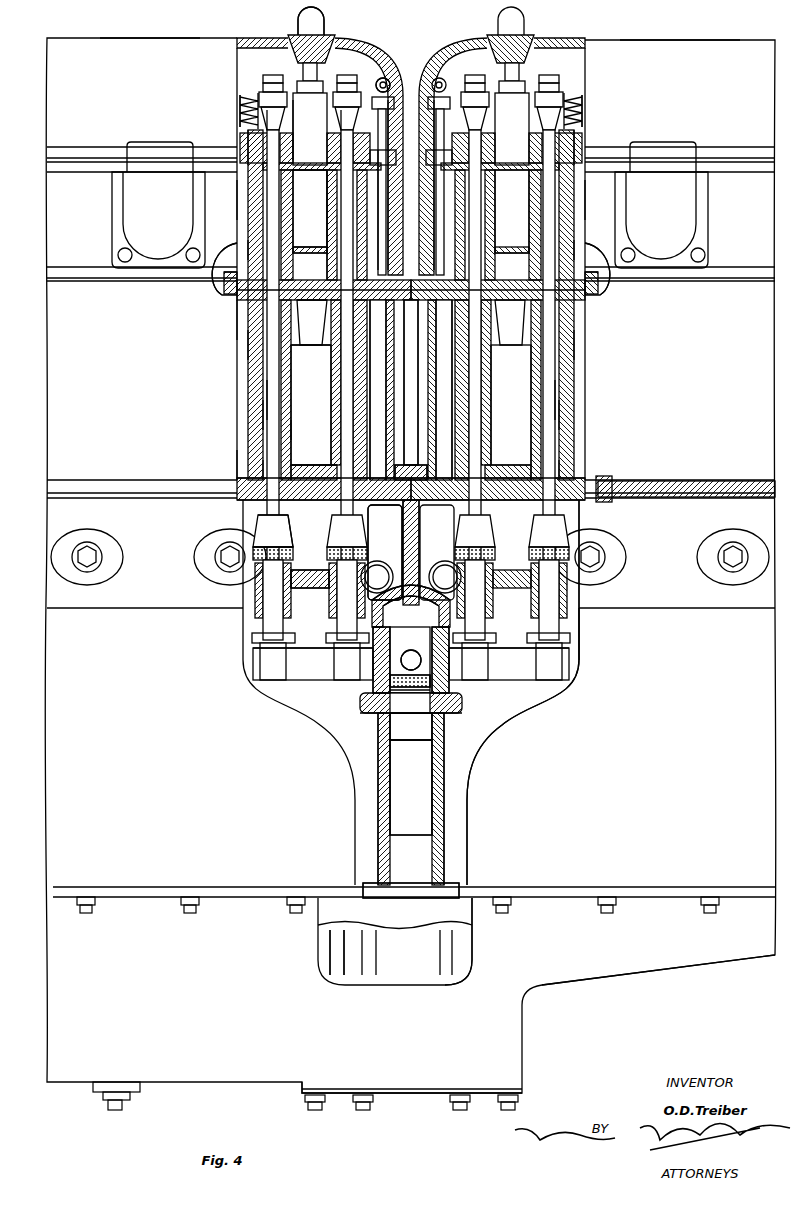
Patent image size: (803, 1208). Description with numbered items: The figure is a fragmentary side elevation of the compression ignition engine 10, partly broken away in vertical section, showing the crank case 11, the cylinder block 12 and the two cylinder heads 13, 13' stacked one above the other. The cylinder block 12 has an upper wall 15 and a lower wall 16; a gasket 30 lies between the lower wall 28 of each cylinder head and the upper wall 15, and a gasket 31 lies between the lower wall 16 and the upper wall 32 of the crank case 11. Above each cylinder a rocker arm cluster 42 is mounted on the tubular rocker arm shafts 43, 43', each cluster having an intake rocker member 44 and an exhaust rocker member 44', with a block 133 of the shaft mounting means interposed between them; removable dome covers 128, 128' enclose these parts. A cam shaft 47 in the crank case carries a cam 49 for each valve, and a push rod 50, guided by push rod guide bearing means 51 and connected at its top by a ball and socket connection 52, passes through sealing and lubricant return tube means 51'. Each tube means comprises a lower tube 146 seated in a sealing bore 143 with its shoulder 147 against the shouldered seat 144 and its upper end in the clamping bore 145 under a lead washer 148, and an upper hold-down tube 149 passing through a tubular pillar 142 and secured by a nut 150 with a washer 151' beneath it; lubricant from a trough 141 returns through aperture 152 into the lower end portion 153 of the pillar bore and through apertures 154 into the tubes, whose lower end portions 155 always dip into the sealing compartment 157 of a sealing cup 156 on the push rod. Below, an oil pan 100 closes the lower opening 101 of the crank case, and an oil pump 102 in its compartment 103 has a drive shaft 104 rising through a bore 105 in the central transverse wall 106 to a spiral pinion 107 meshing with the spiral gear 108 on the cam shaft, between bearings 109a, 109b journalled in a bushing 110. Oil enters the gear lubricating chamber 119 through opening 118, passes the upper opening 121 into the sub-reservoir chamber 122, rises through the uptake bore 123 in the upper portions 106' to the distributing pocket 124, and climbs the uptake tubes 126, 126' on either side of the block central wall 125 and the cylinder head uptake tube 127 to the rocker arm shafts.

The compression ignition internal combustion engine 10 is at (611, 978).
The crank case 11 is at (613, 703).
The cylinder block 12 is at (661, 483).
The cylinder head 13 is at (681, 205).
The cylinder head 13' is at (133, 205).
The upper cylinder block wall 15 is at (237, 320).
The lower cylinder block wall 16 is at (240, 462).
The lower wall 28 is at (240, 265).
The gasket 30 is at (237, 293).
The gasket 31 is at (237, 490).
The upper wall 32 is at (237, 504).
The rocker arm cluster 42 is at (262, 94).
The rocker arm shaft 43 is at (428, 154).
The rocker arm shaft 43' is at (400, 154).
The rocker member 44 is at (413, 56).
The rocker member 44' is at (420, 23).
The cam shaft 47 is at (505, 675).
The cam 49 is at (282, 679).
The push rod 50 is at (330, 400).
The push rod guide bearing means 51 is at (405, 579).
The sealing and lubricant return tube means 51' is at (411, 428).
The ball and socket connection 52 is at (345, 112).
The lubricant reservoir or oil pan 100 is at (412, 1064).
The lower opening 101 is at (399, 896).
The lubricant or oil pump 102 is at (322, 950).
The compartment 103 is at (466, 940).
The drive shaft 104 is at (425, 796).
The bore 105 is at (432, 776).
The central crank case transverse wall 106 is at (392, 799).
The upper portions of crank case central wall 106' is at (430, 550).
The spiral pinion or gear 107 is at (452, 705).
The spiral gear 108 is at (392, 683).
The cam shaft bearing or journal ring 109a is at (374, 662).
The cam shaft bearing or journal ring 109b is at (448, 662).
The bushing or bearing sleeve 110 is at (390, 690).
The opening 118 is at (411, 660).
The cam shaft drive gear lubricating chamber 119 is at (411, 635).
The upper opening 121 is at (421, 632).
The sub-reservoir chamber 122 is at (385, 552).
The intermediate lubricant uptake bore 123 is at (419, 551).
The distributing pocket 124 is at (430, 470).
The central transverse wall 125 is at (418, 383).
The cylinder block lubricant uptake tube 126 is at (484, 390).
The cylinder block uptake tube 126' is at (330, 390).
The cylinder head lubricant uptake tube 127 is at (385, 200).
The removable dome cover 128 is at (680, 35).
The cover 128' is at (150, 33).
The block 133 is at (408, 130).
The trough 141 is at (345, 212).
The tubular pillar 142 is at (250, 200).
The sealing bore 143 is at (407, 464).
The shouldered seat 144 is at (575, 468).
The sealing and clamping bore 145 is at (407, 347).
The lower sealing and lubricant return tube 146 is at (262, 415).
The lower shoulder 147 is at (260, 470).
The lead washer 148 is at (250, 345).
The upper sealing lubricant return and cylinder head hold-down tube 149 is at (408, 235).
The nut 150 is at (249, 142).
The spring chamber 151' is at (409, 180).
The lubricant return aperture 152 is at (592, 238).
The lower end portion 153 is at (235, 275).
The lubricant return aperture 154 is at (410, 316).
The lower end portion 155 is at (290, 516).
The sealing cup member 156 is at (293, 550).
The sealing compartment 157 is at (292, 532).